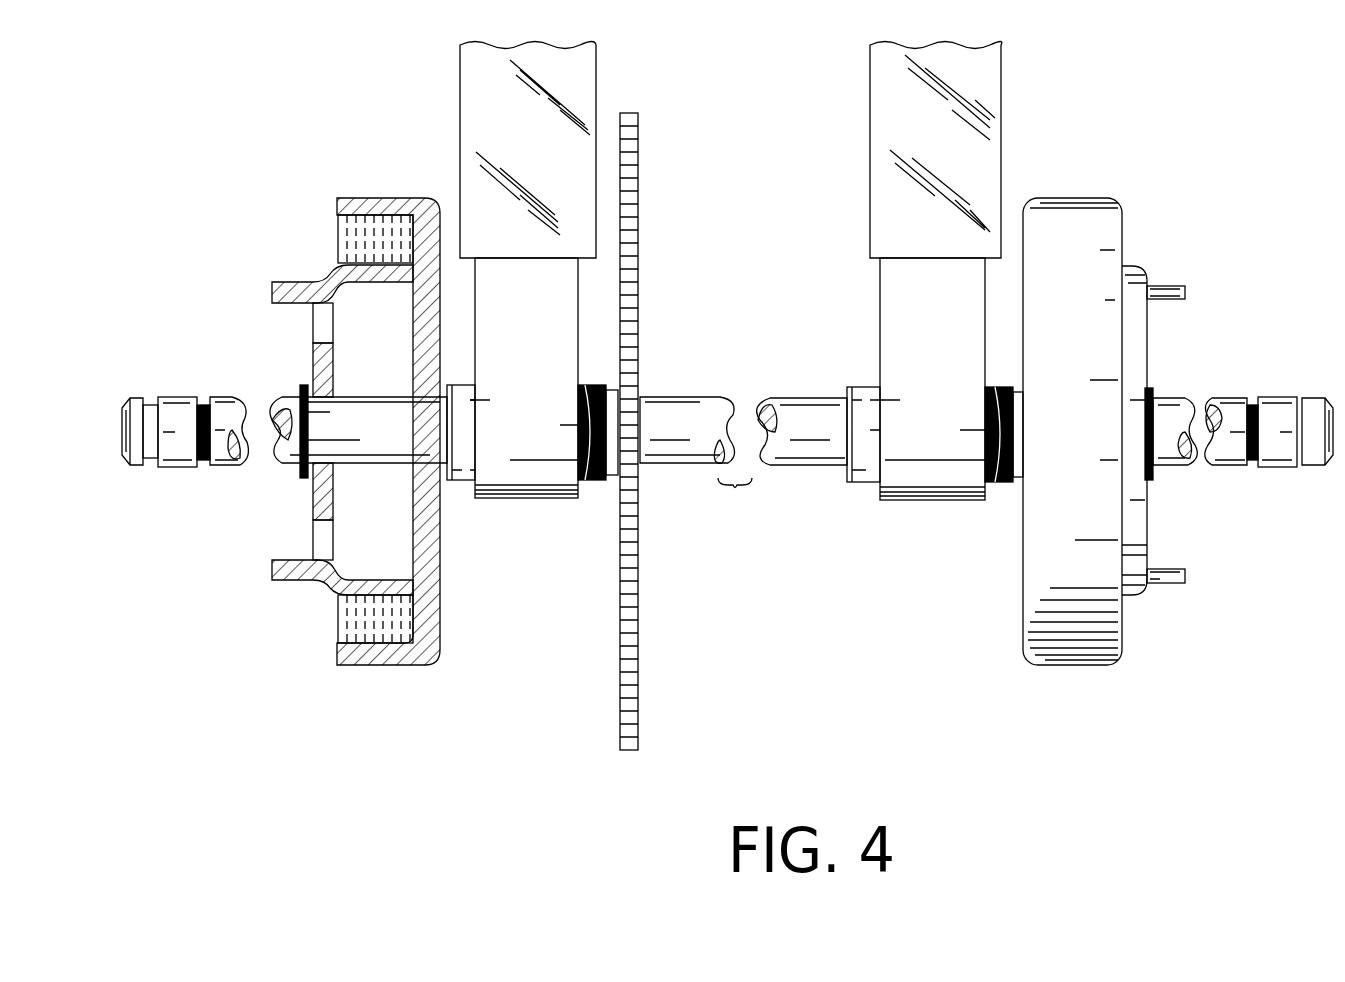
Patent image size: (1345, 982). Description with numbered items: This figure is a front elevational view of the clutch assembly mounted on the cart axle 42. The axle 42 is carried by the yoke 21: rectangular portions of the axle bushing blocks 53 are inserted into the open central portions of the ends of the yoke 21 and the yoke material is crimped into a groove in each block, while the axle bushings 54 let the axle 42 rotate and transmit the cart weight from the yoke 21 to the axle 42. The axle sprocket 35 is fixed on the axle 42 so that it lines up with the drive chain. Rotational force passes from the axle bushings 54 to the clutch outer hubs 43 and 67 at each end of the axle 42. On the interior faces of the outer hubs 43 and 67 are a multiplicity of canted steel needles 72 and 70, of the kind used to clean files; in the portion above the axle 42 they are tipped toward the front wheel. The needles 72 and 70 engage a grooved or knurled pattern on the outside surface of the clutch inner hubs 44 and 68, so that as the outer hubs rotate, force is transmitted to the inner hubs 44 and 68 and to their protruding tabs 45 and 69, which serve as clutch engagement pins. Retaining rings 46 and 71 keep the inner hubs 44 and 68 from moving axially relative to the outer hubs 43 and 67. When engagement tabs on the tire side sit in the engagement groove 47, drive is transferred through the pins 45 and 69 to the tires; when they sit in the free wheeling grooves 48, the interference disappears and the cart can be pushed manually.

The yoke 21 is at (470, 85).
The axle sprocket 35 is at (618, 710).
The axle 42 is at (688, 405).
The clutch outer hub 43 is at (385, 665).
The clutch inner hub 44 is at (312, 500).
The protruding tab 45 is at (275, 290).
The retaining ring 46 is at (300, 395).
The engagement groove 47 is at (207, 410).
The free wheeling groove 48 is at (150, 408).
The axle bushing block 53 is at (520, 488).
The axle bushing 54 is at (593, 470).
The clutch outer hub 67 is at (1100, 640).
The clutch inner hub 68 is at (1138, 590).
The protruding tab 69 is at (1185, 576).
The needles 70 is at (1095, 215).
The retaining ring 71 is at (1150, 482).
The needles 72 is at (340, 615).